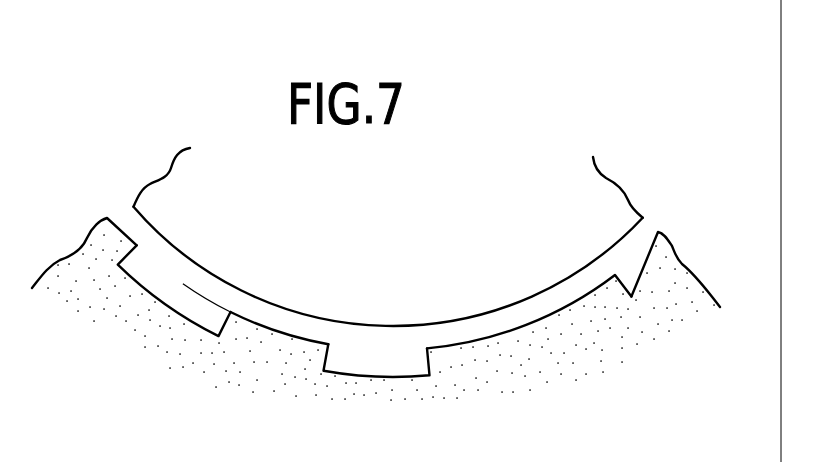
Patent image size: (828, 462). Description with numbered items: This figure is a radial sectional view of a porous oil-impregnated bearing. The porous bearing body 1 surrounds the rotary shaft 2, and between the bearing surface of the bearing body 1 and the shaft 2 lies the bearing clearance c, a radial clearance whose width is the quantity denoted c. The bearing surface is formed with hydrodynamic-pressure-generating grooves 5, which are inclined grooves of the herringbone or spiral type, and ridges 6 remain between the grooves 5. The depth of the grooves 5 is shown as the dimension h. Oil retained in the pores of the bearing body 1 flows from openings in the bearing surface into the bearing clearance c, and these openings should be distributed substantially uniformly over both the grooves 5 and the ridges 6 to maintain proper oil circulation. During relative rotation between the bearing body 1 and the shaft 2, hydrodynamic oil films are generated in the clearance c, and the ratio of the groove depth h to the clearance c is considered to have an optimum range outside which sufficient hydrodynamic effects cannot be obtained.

The bearing body 1 is at (178, 390).
The rotary shaft 2 is at (367, 221).
The hydrodynamic-pressure-generating grooves 5 is at (366, 357).
The ridges 6 is at (292, 335).
The depth of the hydrodynamic-pressure-generating grooves h is at (152, 343).
The bearing clearance c is at (498, 370).